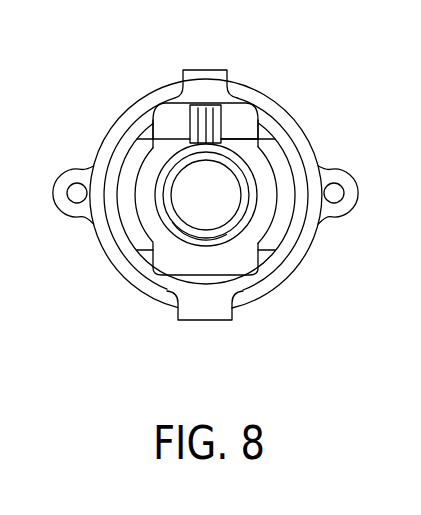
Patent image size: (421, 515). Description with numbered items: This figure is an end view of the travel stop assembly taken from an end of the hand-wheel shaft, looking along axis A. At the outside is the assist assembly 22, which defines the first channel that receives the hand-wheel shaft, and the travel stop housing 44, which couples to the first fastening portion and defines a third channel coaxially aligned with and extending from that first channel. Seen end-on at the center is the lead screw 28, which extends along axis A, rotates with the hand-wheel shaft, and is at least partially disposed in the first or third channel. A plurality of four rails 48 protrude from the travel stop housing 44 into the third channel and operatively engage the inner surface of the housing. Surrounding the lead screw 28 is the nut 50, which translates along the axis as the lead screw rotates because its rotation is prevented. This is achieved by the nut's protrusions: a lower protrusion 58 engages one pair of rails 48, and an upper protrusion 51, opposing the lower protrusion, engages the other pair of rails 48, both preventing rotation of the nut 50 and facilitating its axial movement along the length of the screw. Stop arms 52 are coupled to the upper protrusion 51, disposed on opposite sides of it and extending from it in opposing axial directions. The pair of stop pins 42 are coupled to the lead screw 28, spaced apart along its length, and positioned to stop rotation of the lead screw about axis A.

The assist assembly 22 is at (90, 132).
The lead screw 28 is at (150, 202).
The stop pins 42 is at (236, 126).
The travel stop housing 44 is at (160, 75).
The rails 48 is at (145, 137).
The nut 50 is at (281, 159).
The upper protrusion 51 is at (170, 127).
The stop arms 52 is at (260, 133).
The lower protrusion 58 is at (178, 261).